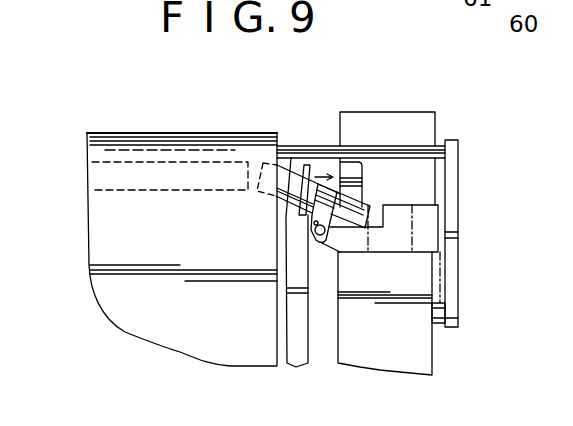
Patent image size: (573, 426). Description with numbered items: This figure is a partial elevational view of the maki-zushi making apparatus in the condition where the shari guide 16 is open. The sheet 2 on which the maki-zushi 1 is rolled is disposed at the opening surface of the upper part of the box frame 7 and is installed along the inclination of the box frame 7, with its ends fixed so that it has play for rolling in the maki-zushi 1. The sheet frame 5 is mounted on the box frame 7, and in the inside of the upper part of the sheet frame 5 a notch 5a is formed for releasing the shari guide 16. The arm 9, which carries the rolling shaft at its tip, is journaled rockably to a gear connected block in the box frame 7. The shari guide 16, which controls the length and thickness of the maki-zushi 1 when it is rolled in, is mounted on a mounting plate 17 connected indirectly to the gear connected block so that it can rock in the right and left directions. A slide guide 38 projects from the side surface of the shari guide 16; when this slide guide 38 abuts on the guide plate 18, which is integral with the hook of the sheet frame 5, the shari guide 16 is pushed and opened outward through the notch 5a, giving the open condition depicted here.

The maki-zushi 1 is at (131, 163).
The sheet 2 is at (98, 240).
The sheet frame 5 is at (303, 268).
The notch 5a is at (307, 164).
The box frame 7 is at (404, 110).
The arm 9 is at (449, 187).
The shari guide 16 is at (288, 167).
The mounting plate 17 is at (433, 236).
The guide plate 18 is at (353, 170).
The slide guide 38 is at (370, 203).